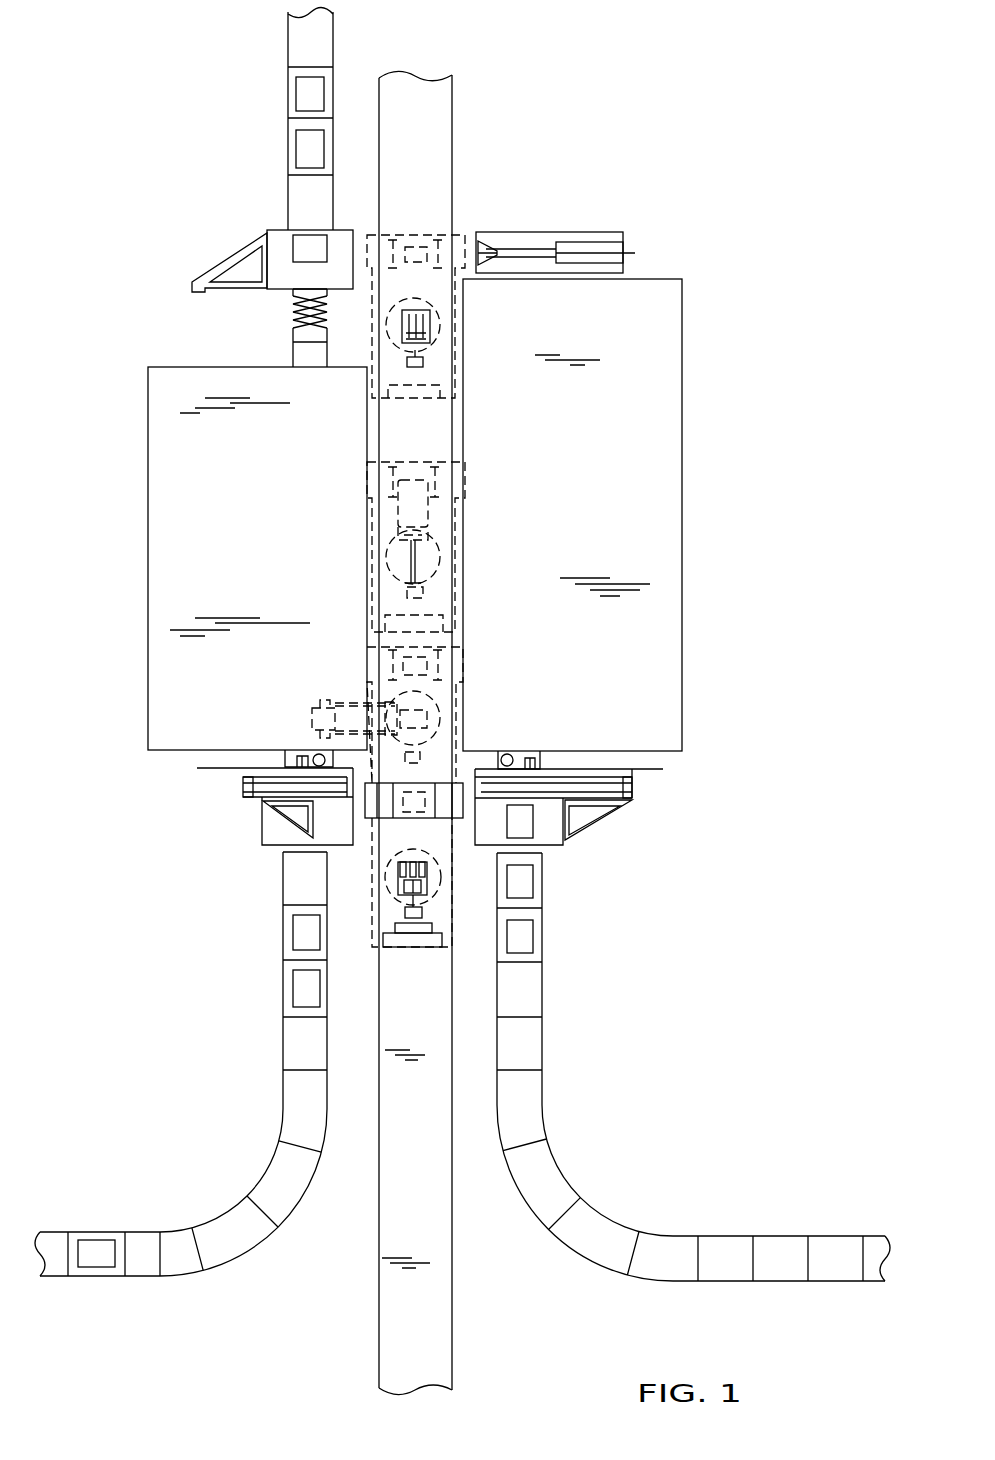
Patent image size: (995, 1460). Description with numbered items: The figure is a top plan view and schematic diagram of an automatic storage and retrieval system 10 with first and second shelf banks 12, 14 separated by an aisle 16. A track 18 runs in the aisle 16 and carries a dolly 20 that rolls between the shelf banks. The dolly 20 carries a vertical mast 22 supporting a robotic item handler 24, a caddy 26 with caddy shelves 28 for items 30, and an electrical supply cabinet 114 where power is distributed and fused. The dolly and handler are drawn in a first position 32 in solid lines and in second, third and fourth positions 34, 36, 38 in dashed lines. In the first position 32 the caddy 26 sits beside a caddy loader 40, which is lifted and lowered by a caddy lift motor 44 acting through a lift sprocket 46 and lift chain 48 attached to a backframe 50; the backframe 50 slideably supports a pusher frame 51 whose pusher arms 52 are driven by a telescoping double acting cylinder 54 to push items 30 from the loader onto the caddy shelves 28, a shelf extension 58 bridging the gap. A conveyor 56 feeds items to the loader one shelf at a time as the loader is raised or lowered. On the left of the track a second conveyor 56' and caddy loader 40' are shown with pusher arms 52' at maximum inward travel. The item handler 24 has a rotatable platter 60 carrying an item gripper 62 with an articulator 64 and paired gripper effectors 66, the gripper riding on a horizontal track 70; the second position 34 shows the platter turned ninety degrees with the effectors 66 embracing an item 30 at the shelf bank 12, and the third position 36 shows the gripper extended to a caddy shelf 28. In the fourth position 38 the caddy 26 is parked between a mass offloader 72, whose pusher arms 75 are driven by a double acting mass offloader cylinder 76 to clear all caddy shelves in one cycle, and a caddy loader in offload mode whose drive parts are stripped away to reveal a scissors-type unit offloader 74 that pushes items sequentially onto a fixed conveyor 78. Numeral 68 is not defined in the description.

The automatic storage and retrieval system 10 is at (758, 569).
The first shelf bank 12 is at (170, 494).
The second shelf bank 14 is at (655, 388).
The aisle 16 is at (378, 425).
The track 18 is at (442, 1323).
The dolly 20 is at (352, 941).
The vertical mast 22 is at (415, 933).
The robotic item handler 24 is at (392, 899).
The caddy 26 is at (378, 782).
The caddy shelves 28 is at (435, 790).
The items 30 is at (307, 153).
The first position 32 is at (450, 935).
The second position 34 is at (467, 648).
The third position 36 is at (406, 547).
The fourth position 38 is at (462, 329).
The caddy loader 40 is at (574, 782).
The caddy loader 40' is at (255, 803).
The caddy lift motor 44 is at (502, 755).
The lift sprocket 46 is at (545, 753).
The lift chain 48 is at (530, 757).
The backframe 50 is at (200, 768).
The pusher frame 51 is at (250, 793).
The pusher arms 52 is at (616, 824).
The pusher arms 52' is at (235, 819).
The telescoping double acting cylinder 54 is at (566, 785).
The conveyor 56 is at (693, 1067).
The conveyor 56' is at (181, 1064).
The shelf extension 58 is at (452, 868).
The rotatable platter 60 is at (390, 863).
The item gripper 62 is at (390, 697).
The articulator portion 64 is at (412, 895).
The gripper effectors 66 is at (328, 706).
The gripper head 68 is at (420, 858).
The horizontal track 70 is at (410, 572).
The mass offloader 72 is at (567, 233).
The unit offloader 74 is at (295, 332).
The pusher arms 75 is at (490, 248).
The double acting mass offloader cylinder 76 is at (610, 250).
The conveyor 78 is at (300, 48).
The electrical supply cabinet 114 is at (430, 947).